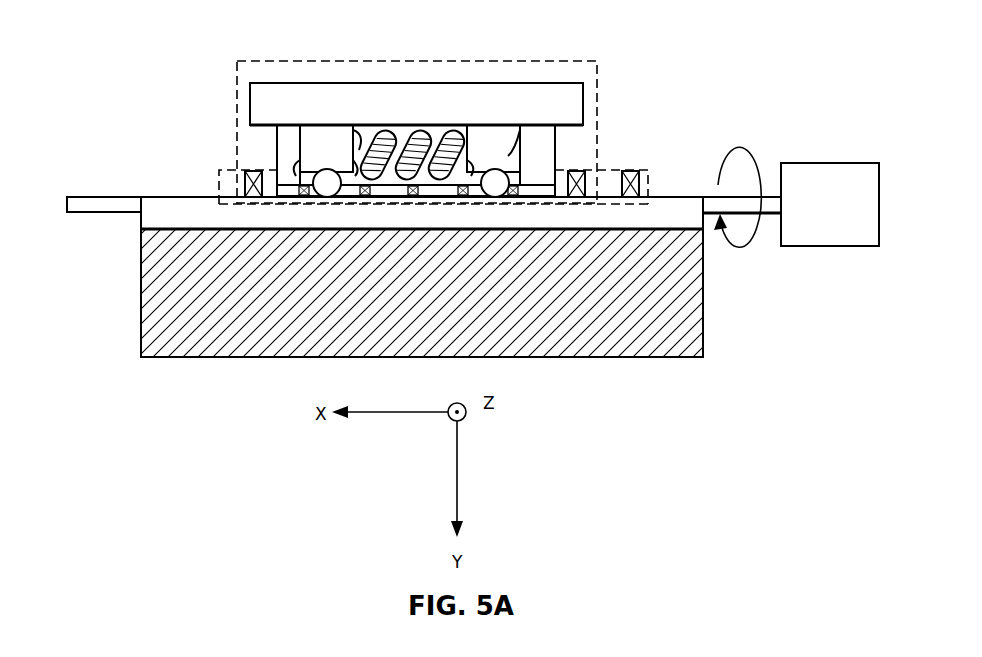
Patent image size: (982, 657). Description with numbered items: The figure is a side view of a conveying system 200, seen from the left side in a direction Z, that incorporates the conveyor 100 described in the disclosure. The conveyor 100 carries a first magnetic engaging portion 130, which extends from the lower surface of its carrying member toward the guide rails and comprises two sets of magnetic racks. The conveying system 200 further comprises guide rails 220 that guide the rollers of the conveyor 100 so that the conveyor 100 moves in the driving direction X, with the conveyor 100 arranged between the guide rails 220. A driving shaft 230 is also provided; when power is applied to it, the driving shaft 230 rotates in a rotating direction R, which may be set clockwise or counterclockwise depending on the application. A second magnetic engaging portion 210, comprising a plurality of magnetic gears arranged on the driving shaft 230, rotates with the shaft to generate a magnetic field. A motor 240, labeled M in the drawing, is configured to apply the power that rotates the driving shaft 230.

The conveying system 200 is at (403, 35).
The conveyor 100 is at (526, 55).
The first magnetic engaging portion 130 is at (557, 139).
The second magnetic engaging portion 210 is at (623, 160).
The guide rails 220 is at (175, 197).
The driving shaft 230 is at (93, 197).
The motor 240 is at (816, 163).